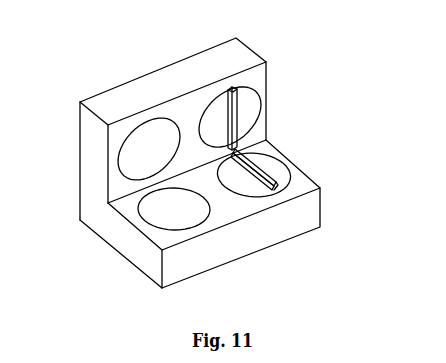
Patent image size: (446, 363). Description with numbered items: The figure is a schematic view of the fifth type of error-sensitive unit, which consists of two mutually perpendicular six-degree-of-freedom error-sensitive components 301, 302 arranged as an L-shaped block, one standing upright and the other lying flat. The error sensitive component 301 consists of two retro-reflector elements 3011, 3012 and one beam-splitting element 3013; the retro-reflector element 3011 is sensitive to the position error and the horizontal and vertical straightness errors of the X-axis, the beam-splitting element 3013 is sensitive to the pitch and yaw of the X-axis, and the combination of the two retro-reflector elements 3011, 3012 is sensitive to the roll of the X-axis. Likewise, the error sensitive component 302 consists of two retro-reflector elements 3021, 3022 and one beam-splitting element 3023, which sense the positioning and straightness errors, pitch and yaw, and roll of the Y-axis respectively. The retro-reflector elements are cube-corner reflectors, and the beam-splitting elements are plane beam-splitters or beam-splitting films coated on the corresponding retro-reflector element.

The 6DOF error sensitive component 301 is at (89, 155).
The 6DOF error sensitive component 302 is at (120, 240).
The retro-reflector element 3011 is at (148, 135).
The retro-reflector element 3012 is at (205, 112).
The beam-splitting element 3013 is at (245, 102).
The retro-reflector element 3021 is at (182, 220).
The retro-reflector element 3022 is at (237, 185).
The beam-splitting element 3023 is at (278, 176).